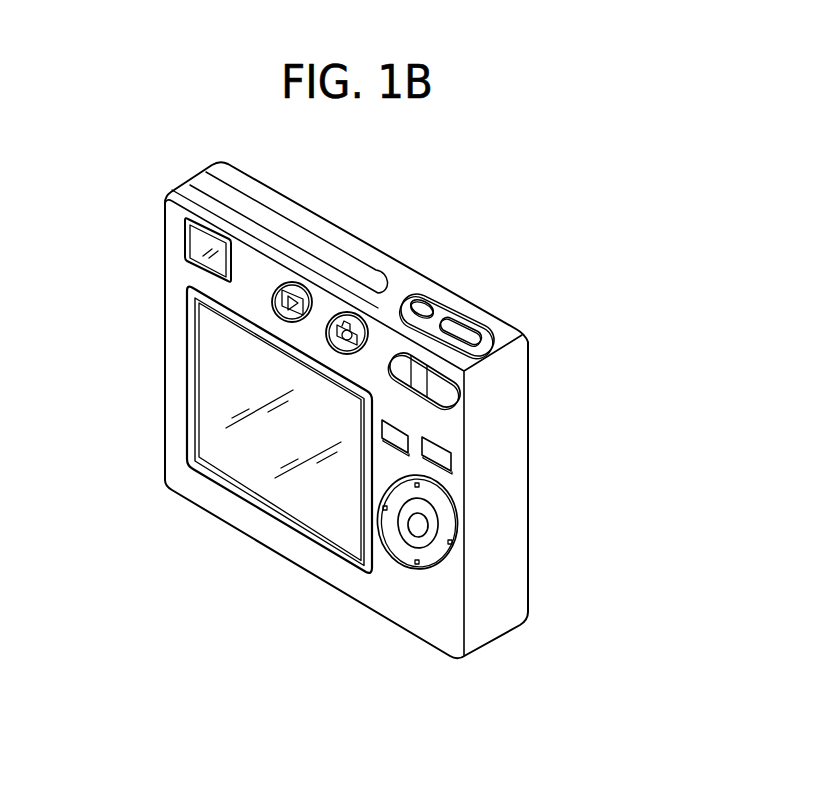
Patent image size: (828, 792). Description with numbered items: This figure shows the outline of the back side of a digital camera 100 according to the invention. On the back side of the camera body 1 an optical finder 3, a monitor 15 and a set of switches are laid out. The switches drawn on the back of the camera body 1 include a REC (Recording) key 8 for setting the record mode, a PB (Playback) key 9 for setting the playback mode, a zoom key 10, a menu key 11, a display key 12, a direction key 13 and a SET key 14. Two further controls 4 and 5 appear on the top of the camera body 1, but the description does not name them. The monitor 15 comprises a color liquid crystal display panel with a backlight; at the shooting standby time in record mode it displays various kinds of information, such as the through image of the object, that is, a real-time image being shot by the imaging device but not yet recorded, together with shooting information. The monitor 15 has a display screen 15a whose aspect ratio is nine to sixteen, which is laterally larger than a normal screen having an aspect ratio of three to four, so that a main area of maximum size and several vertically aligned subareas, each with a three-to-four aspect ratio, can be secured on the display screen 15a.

The digital camera 100 is at (487, 243).
The camera body 1 is at (265, 182).
The optical finder 3 is at (185, 241).
The PB (Playback) key 9 is at (300, 295).
The REC (Recording) key 8 is at (353, 320).
The power button 4 is at (424, 305).
The shutter release button 5 is at (465, 330).
The zoom key 10 is at (446, 391).
The menu key 11 is at (392, 431).
The display key 12 is at (448, 455).
The direction key 13 is at (440, 507).
The SET key 14 is at (420, 525).
The monitor (LCD) 15 is at (262, 481).
The display screen 15a is at (349, 518).